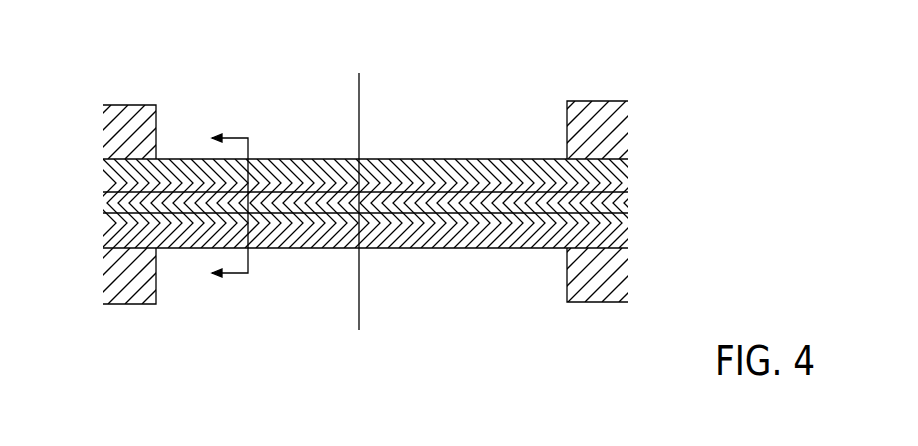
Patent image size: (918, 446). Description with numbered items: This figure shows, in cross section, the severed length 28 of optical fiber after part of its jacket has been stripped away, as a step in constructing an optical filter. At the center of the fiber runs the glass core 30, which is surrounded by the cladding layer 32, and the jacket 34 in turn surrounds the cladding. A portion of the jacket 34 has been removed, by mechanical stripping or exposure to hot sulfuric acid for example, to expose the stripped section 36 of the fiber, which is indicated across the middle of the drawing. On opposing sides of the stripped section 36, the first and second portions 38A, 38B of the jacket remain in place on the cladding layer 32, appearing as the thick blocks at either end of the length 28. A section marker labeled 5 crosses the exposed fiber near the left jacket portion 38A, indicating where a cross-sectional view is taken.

The length of fiber 28 is at (366, 221).
The glass core 30 is at (627, 193).
The cladding layer 32 is at (623, 175).
The jacket 34 is at (622, 128).
The stripped section 36 is at (391, 269).
The first portion of the jacket 38A is at (122, 107).
The second portion of the jacket 38B is at (580, 105).
The section line 5 is at (285, 201).